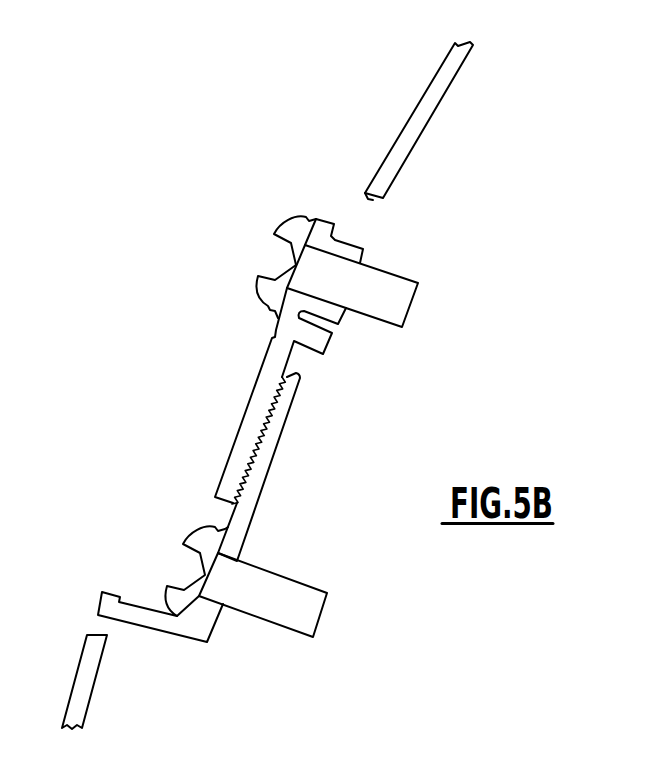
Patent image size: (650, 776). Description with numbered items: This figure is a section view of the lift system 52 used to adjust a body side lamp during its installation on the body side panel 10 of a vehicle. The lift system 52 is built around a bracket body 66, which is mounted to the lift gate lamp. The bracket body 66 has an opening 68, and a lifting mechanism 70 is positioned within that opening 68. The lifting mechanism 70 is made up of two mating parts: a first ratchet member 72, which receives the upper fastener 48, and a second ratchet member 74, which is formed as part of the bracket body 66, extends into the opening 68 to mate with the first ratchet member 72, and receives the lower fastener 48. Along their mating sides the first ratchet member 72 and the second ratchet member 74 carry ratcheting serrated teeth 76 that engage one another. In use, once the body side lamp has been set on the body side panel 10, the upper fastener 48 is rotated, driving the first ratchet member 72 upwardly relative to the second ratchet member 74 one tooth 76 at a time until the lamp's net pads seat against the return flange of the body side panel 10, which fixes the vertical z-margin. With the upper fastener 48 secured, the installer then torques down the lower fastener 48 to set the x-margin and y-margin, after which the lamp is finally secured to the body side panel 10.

The body side panel 10 is at (87, 672).
The fastener 48 is at (390, 287).
The lift system 52 is at (237, 272).
The bracket body 66 is at (401, 141).
The opening 68 is at (373, 200).
The lifting mechanism 70 is at (338, 392).
The first ratchet member 72 is at (258, 393).
The second ratchet member 74 is at (267, 462).
The ratcheting serrated teeth 76 is at (268, 410).